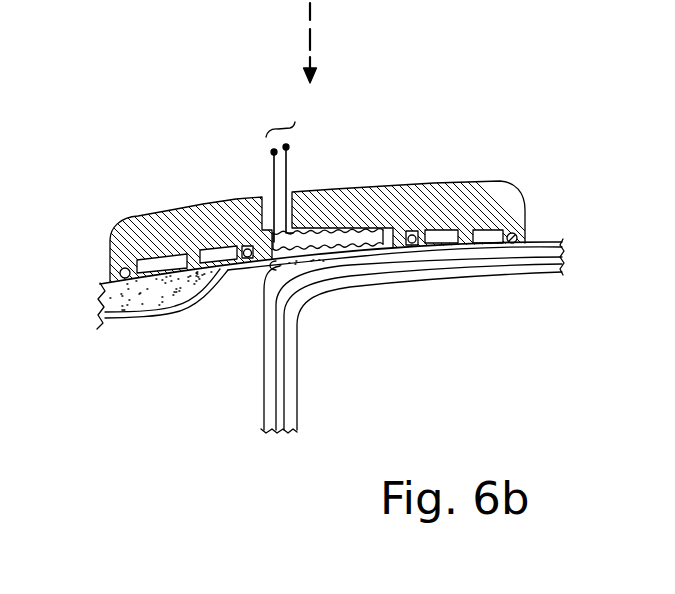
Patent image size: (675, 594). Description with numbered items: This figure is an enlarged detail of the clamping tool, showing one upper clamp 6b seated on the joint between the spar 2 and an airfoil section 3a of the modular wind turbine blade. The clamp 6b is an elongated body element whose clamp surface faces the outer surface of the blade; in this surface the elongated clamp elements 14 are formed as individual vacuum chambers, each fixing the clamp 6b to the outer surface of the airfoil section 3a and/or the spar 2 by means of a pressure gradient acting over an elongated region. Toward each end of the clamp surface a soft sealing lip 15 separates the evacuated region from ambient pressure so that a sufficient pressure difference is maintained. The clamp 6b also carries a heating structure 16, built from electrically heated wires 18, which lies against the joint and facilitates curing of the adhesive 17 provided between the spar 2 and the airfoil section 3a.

The spar 2 is at (523, 262).
The airfoil section 3a is at (127, 300).
The upper clamp 6b is at (384, 192).
The clamp element 14 is at (207, 253).
The soft sealing lip 15 is at (122, 268).
The heating structure 16 is at (270, 117).
The adhesive 17 is at (262, 276).
The electrically heated wires 18 is at (327, 233).